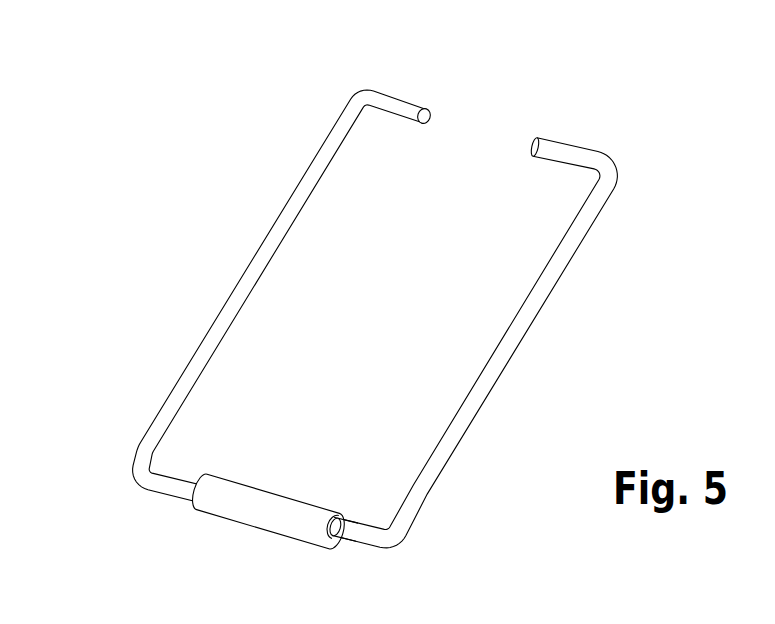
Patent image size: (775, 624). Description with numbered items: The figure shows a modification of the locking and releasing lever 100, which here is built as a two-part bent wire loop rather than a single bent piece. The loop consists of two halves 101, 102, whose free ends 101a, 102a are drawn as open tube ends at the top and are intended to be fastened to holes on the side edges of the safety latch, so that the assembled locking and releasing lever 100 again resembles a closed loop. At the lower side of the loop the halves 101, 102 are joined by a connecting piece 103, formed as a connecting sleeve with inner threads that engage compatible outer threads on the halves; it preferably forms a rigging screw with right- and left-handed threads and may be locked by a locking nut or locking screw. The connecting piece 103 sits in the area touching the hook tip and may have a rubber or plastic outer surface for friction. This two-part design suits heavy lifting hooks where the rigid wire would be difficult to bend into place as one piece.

The locking and releasing lever 100 is at (370, 319).
The half of the wire loop 101 is at (198, 356).
The free end 101a is at (410, 106).
The half of the wire loop 102 is at (527, 333).
The free end 102a is at (560, 148).
The connecting piece 103 is at (262, 511).